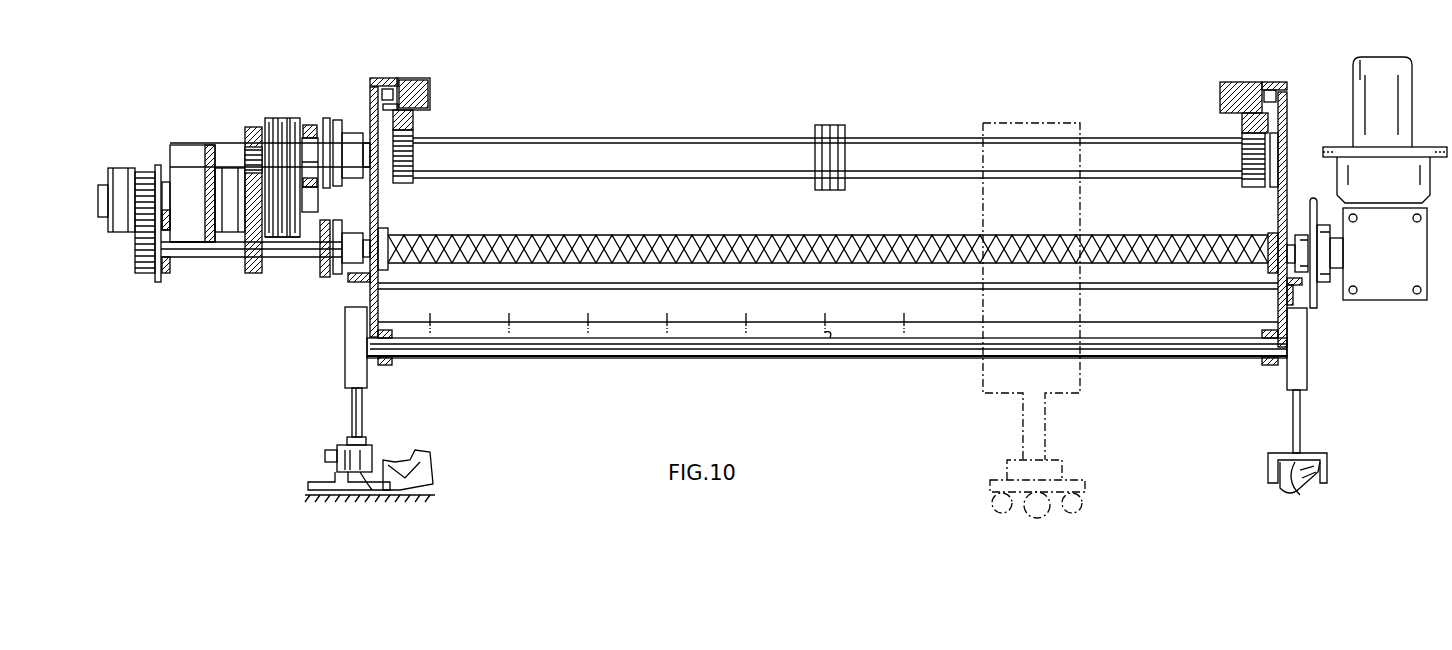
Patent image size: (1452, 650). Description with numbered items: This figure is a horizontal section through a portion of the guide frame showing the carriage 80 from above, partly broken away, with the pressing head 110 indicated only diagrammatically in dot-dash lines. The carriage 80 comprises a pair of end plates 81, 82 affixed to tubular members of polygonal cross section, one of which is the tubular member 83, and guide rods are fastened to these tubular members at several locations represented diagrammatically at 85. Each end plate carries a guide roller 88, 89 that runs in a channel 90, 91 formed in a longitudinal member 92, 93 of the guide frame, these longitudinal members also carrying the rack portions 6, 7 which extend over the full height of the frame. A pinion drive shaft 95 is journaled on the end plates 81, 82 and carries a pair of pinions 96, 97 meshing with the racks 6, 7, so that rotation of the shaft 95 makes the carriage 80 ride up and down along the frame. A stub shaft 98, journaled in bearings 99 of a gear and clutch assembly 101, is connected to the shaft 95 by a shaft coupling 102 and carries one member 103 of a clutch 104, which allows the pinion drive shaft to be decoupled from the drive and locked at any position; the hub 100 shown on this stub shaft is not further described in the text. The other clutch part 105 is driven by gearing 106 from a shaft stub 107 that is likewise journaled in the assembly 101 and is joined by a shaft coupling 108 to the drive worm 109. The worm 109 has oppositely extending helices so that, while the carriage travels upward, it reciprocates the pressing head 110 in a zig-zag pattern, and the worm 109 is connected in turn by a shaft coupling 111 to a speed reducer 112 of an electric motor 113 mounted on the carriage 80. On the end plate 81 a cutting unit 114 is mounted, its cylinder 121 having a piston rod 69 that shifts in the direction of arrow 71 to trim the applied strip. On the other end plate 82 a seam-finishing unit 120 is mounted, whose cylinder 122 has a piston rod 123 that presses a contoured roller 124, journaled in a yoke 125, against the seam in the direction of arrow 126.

The rack portion 6 is at (1242, 125).
The rack portion 7 is at (413, 121).
The piston rod 69 is at (365, 415).
The arrow 71 is at (340, 398).
The carriage 80 is at (1073, 88).
The end plate 81 is at (378, 212).
The end plate 82 is at (1287, 112).
The tubular member 83 is at (698, 310).
The location 85 is at (895, 326).
The guide roller 88 is at (386, 88).
The guide roller 89 is at (1270, 88).
The channel 90 is at (405, 79).
The channel 91 is at (1262, 90).
The longitudinal member 92 is at (431, 93).
The longitudinal member 93 is at (1220, 95).
The pinion drive shaft 95 is at (606, 138).
The pinion 96 is at (1242, 187).
The pinion 97 is at (412, 182).
The stub shaft 98 is at (312, 125).
The bearings 99 is at (250, 140).
The hub 100 is at (314, 194).
The gear and clutch assembly 101 is at (229, 272).
The shaft coupling 102 is at (338, 128).
The clutch member 103 is at (282, 118).
The clutch 104 is at (277, 250).
The clutch part 105 is at (300, 238).
The gearing 106 is at (150, 275).
The shaft stub 107 is at (186, 258).
The shaft coupling 108 is at (336, 278).
The drive worm 109 is at (542, 235).
The pressing head 110 is at (982, 385).
The shaft coupling 111 is at (1317, 308).
The speed reducer 112 is at (1392, 300).
The electric motor 113 is at (1383, 57).
The cutting unit 114 is at (298, 489).
The seam-finishing unit 120 is at (1325, 398).
The cylinder 121 is at (348, 340).
The cylinder 122 is at (1290, 375).
The piston rod 123 is at (1302, 422).
The contoured roller 124 is at (1305, 488).
The yoke 125 is at (1327, 468).
The arrow 126 is at (1280, 408).